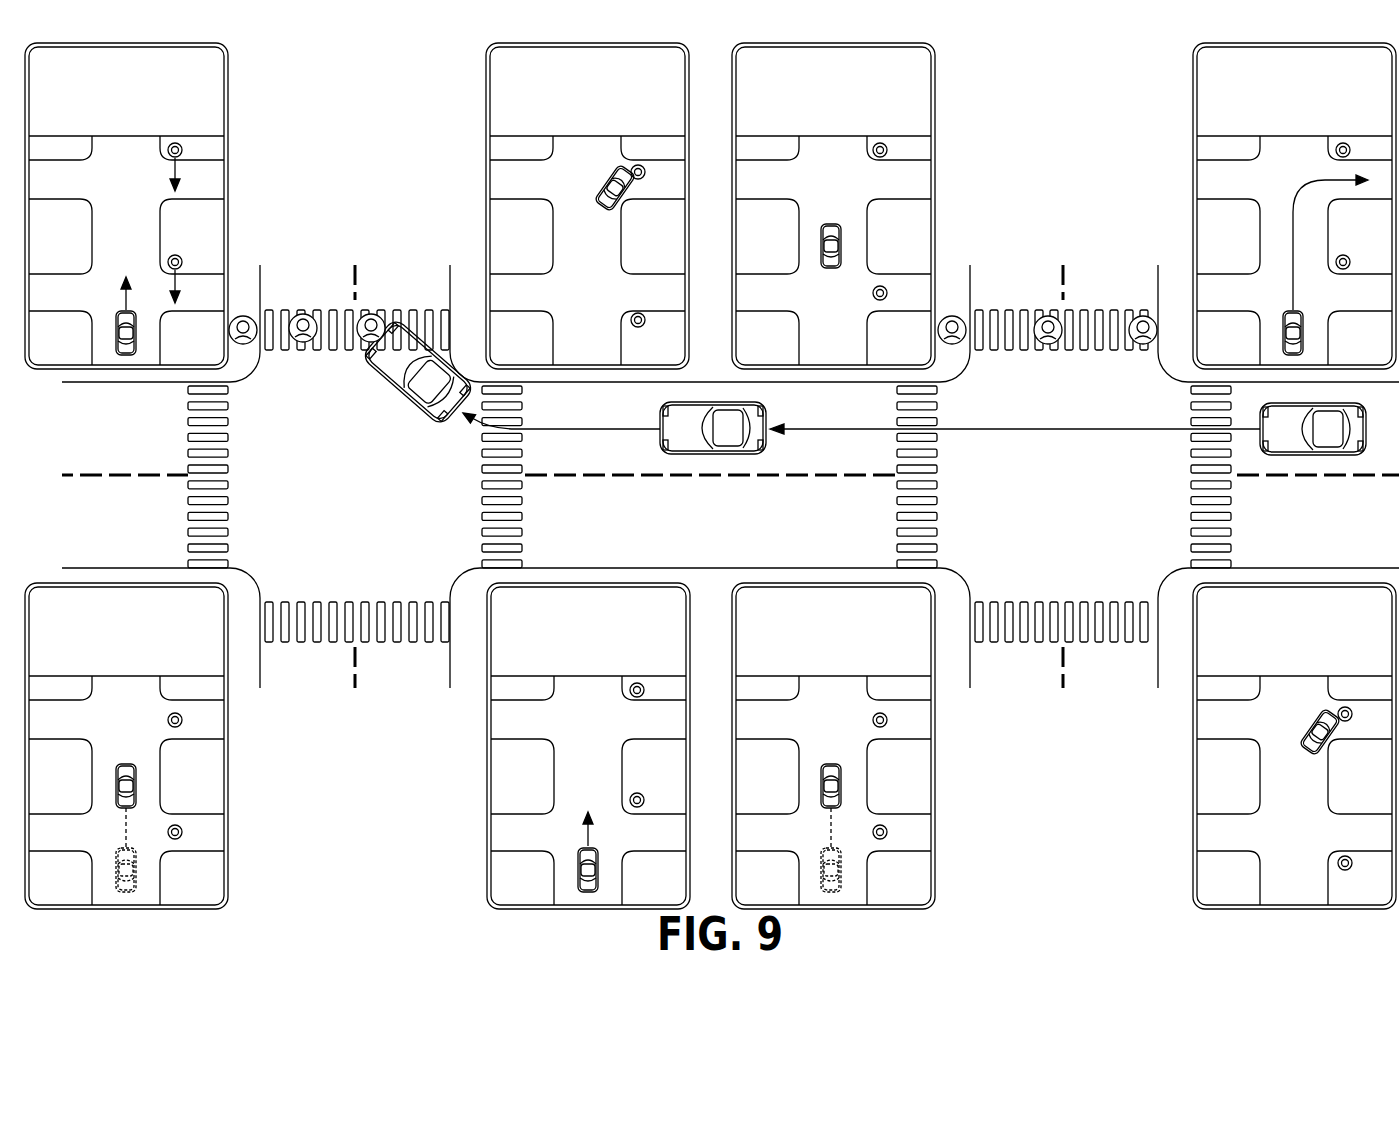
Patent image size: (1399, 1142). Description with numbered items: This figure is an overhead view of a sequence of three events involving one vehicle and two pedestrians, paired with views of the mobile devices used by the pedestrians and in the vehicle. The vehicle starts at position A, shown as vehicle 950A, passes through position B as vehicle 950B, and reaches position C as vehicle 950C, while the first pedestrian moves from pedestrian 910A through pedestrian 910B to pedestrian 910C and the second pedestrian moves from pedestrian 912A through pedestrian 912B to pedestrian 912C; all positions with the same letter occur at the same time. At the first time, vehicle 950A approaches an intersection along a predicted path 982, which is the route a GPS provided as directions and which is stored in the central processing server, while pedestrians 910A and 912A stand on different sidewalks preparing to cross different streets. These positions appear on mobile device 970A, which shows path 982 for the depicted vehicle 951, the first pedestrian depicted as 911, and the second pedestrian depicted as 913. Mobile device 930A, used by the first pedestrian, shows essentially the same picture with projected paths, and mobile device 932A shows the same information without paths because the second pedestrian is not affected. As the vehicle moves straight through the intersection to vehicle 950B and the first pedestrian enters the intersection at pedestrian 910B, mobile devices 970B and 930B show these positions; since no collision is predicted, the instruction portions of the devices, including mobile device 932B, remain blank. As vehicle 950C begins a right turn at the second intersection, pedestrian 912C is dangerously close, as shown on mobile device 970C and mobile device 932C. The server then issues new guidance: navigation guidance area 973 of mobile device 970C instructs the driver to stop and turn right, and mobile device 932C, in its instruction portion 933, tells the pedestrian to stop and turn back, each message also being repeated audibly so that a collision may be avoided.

The first pedestrian at position A 910A is at (950, 345).
The first pedestrian at position B 910B is at (1048, 316).
The first pedestrian at position C 910C is at (1143, 316).
The depiction of first pedestrian 911 is at (176, 255).
The second pedestrian at position A 912A is at (245, 344).
The second pedestrian at position B 912B is at (303, 314).
The second pedestrian at position C 912C is at (371, 314).
The depiction of second pedestrian 913 is at (168, 153).
The mobile device of first pedestrian at position A 930A is at (228, 170).
The mobile device of first pedestrian at position B 930B is at (228, 790).
The mobile device of second pedestrian at position A 932A is at (487, 790).
The mobile device of second pedestrian at position B 932B is at (935, 790).
The mobile device of second pedestrian at position C 932C is at (1193, 800).
The instruction portion of mobile device 932C 933 is at (1352, 605).
The vehicle at position A 950A is at (1313, 456).
The vehicle at position B 950B is at (715, 455).
The vehicle at position C 950C is at (400, 397).
The depiction of vehicle 951 is at (137, 333).
The vehicle mobile device at position A 970A is at (1193, 95).
The vehicle mobile device at position B 970B is at (935, 170).
The vehicle mobile device at position C 970C is at (486, 93).
The navigation guidance area 973 is at (507, 77).
The predicted path 982 is at (1290, 282).